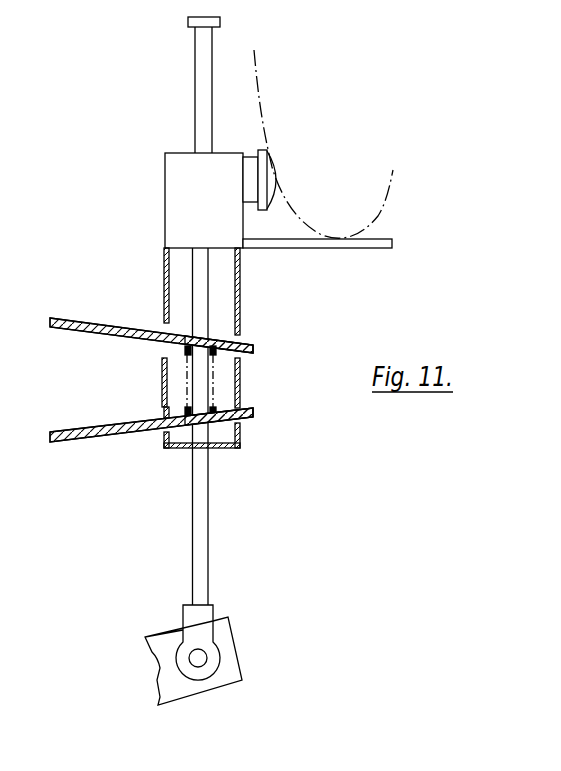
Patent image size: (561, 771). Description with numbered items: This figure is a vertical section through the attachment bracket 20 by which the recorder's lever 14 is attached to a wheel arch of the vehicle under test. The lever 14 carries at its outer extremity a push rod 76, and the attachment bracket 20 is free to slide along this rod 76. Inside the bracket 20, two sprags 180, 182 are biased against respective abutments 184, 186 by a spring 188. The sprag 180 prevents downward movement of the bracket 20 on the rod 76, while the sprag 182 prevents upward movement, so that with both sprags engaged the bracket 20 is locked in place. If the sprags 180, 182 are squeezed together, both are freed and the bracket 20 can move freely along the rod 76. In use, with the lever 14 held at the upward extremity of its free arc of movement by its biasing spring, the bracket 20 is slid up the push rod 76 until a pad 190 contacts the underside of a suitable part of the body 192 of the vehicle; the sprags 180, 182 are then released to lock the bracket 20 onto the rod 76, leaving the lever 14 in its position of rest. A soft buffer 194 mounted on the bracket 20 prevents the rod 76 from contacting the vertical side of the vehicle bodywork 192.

The lever 14 is at (160, 637).
The attachment bracket 20 is at (152, 213).
The push rod 76 is at (199, 537).
The sprag 180 is at (113, 330).
The sprag 182 is at (120, 430).
The abutment 184 is at (238, 347).
The abutment 186 is at (253, 418).
The spring 188 is at (213, 383).
The pad 190 is at (313, 248).
The body of the vehicle 192 is at (291, 203).
The soft buffer 194 is at (250, 175).